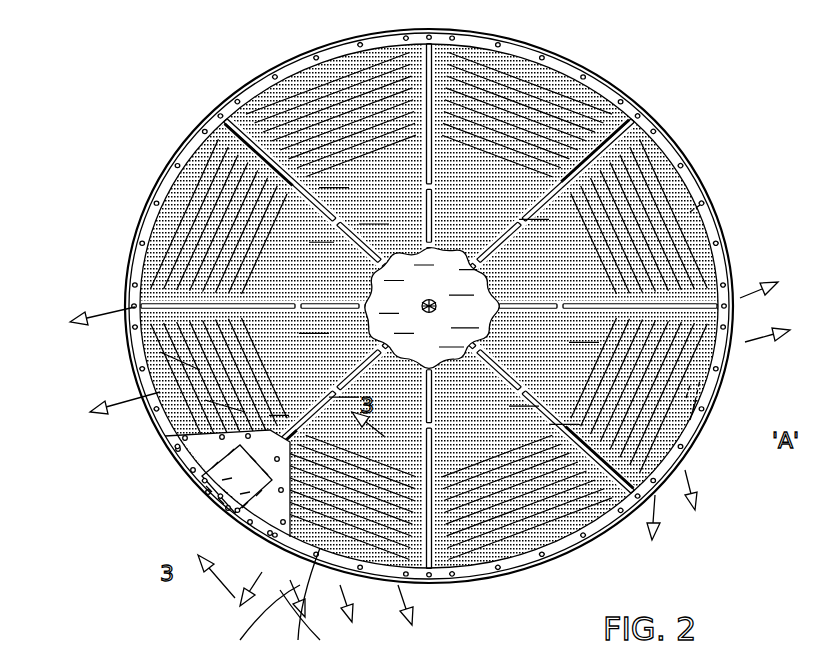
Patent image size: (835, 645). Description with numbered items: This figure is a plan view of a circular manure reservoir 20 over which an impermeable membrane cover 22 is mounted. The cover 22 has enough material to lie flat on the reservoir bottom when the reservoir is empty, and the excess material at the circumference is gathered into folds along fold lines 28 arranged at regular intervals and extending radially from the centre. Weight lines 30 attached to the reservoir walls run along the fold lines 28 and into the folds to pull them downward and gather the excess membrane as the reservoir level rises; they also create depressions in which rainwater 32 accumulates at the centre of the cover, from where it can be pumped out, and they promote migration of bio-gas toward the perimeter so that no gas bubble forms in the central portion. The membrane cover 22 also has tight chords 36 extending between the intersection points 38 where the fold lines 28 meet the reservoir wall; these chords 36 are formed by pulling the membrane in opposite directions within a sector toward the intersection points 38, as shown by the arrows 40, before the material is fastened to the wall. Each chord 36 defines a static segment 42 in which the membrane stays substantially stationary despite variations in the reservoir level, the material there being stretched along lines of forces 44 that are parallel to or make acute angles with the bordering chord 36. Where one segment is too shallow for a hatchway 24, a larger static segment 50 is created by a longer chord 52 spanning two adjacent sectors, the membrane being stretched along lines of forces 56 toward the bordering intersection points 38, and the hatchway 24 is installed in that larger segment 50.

The circular manure reservoir 20 is at (178, 73).
The membrane cover 22 is at (388, 178).
The hatchway 24 is at (190, 503).
The fold lines 28 is at (633, 120).
The weight lines 30 is at (459, 265).
The rainwater 32 is at (470, 150).
The tight chords 36 is at (660, 180).
The intersection points 38 is at (712, 262).
The arrows 40 is at (780, 284).
The static segment 42 is at (700, 205).
The lines of forces 44 is at (690, 420).
The larger static segment 50 is at (320, 548).
The longer chord 52 is at (163, 357).
The lines of forces 56 is at (245, 412).